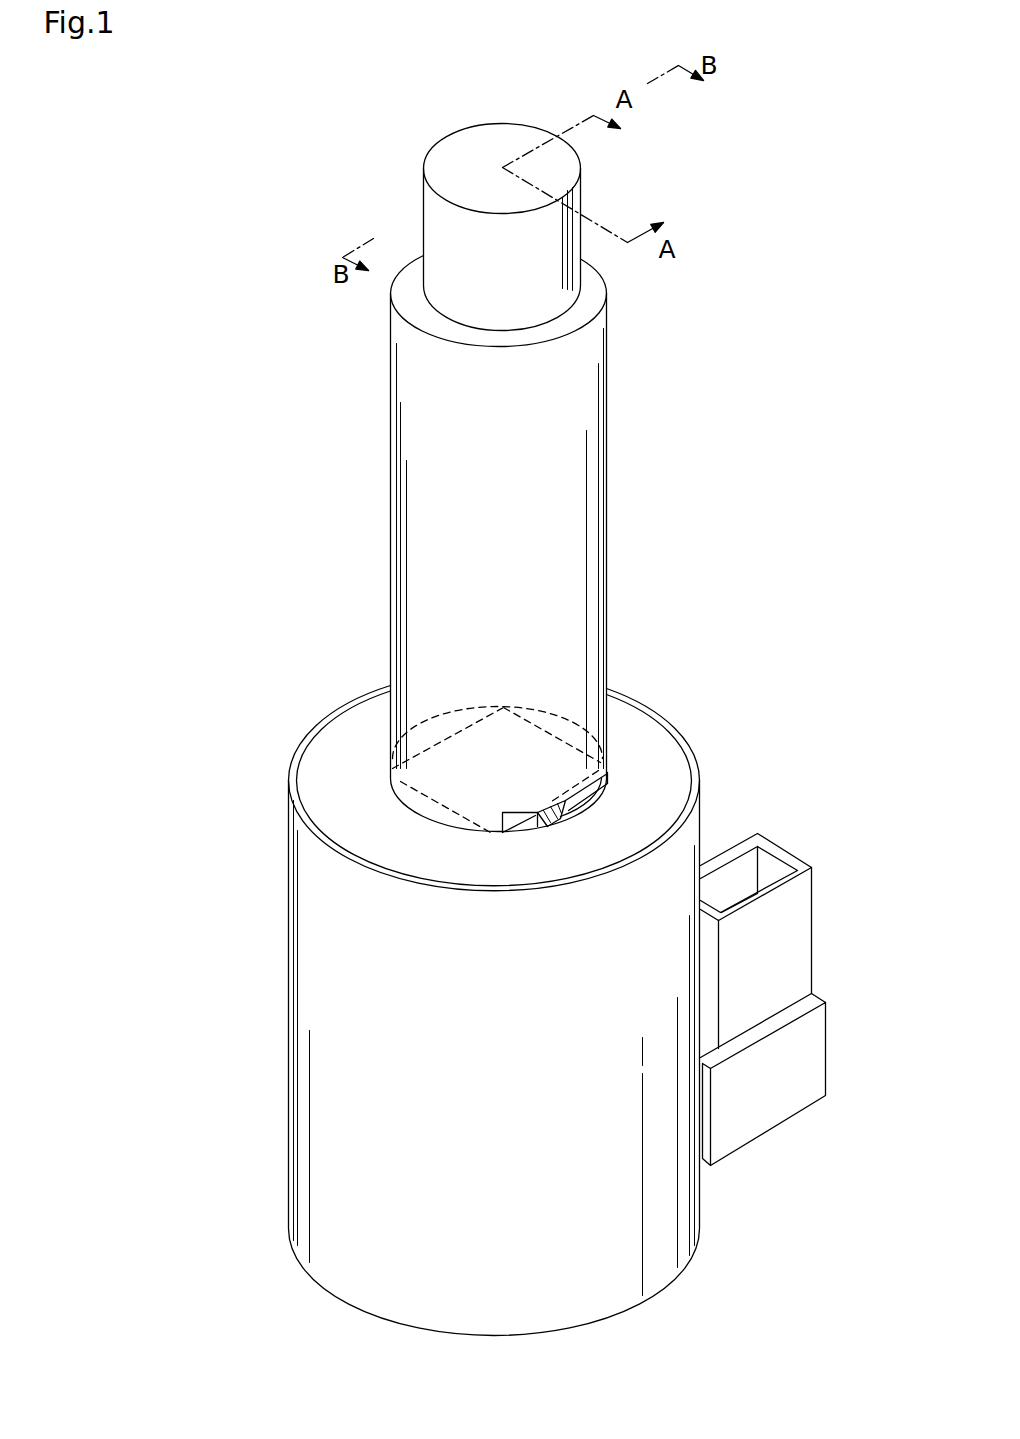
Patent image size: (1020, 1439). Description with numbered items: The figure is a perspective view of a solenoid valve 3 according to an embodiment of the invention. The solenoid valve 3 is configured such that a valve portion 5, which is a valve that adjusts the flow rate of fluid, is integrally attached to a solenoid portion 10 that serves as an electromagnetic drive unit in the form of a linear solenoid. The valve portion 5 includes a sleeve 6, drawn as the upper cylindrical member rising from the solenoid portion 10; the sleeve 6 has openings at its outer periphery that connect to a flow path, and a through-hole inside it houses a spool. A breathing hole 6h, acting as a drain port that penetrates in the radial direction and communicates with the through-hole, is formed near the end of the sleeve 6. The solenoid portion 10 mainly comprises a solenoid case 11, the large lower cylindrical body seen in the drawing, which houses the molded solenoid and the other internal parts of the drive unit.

The solenoid valve 3 is at (288, 563).
The valve portion 5 is at (340, 642).
The sleeve 6 is at (415, 377).
The breathing hole 6h is at (557, 818).
The solenoid portion 10 is at (263, 1047).
The solenoid case 11 is at (332, 928).